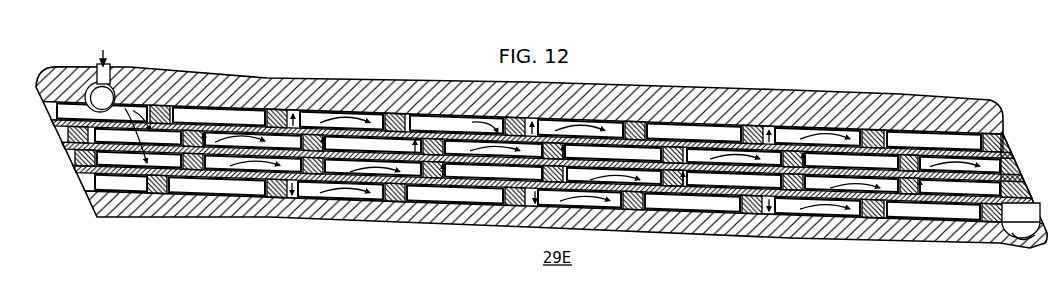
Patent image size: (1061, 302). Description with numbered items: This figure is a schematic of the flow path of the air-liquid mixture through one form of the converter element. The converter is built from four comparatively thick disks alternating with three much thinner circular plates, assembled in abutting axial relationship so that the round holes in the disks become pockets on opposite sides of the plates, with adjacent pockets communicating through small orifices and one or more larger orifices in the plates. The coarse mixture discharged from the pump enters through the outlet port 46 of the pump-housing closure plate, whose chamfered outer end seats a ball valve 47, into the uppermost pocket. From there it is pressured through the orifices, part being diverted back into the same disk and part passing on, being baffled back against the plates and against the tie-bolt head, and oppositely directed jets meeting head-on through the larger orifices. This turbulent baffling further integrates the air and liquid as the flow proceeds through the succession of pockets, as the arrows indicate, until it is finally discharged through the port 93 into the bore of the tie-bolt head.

The air-and-liquid mixture outlet port 46 is at (112, 87).
The ball valve 47 is at (86, 91).
The port 93 is at (1010, 248).